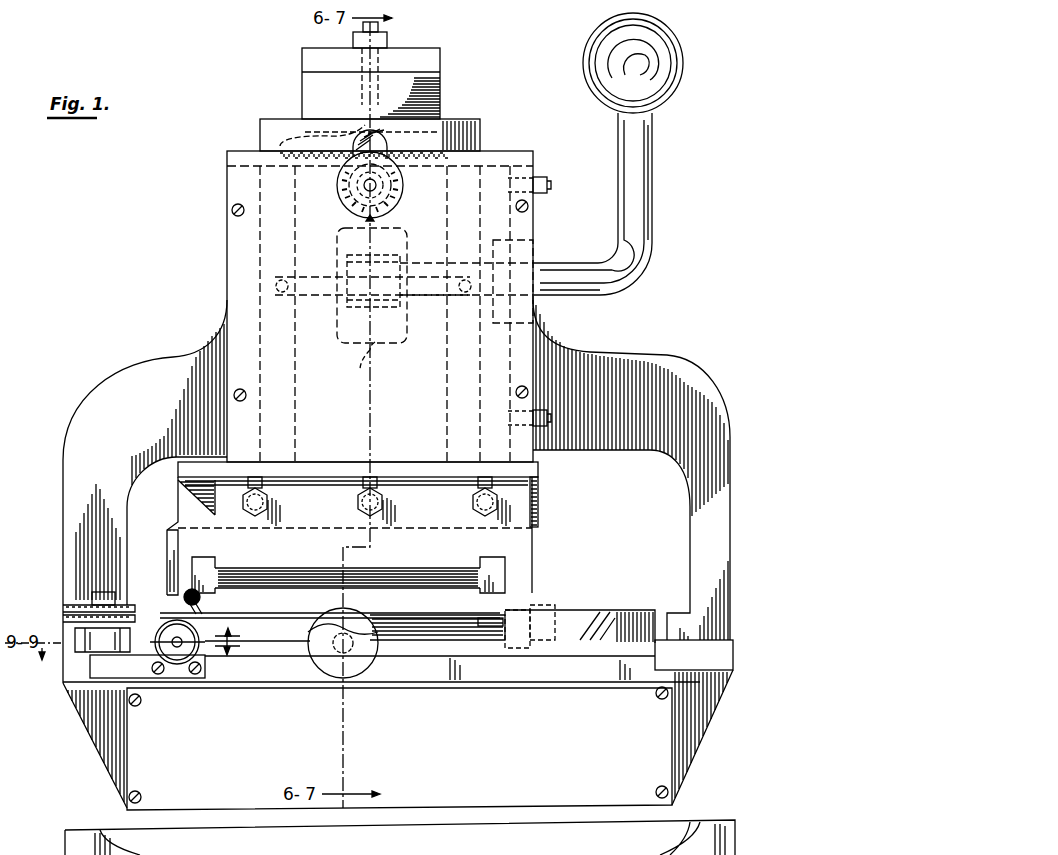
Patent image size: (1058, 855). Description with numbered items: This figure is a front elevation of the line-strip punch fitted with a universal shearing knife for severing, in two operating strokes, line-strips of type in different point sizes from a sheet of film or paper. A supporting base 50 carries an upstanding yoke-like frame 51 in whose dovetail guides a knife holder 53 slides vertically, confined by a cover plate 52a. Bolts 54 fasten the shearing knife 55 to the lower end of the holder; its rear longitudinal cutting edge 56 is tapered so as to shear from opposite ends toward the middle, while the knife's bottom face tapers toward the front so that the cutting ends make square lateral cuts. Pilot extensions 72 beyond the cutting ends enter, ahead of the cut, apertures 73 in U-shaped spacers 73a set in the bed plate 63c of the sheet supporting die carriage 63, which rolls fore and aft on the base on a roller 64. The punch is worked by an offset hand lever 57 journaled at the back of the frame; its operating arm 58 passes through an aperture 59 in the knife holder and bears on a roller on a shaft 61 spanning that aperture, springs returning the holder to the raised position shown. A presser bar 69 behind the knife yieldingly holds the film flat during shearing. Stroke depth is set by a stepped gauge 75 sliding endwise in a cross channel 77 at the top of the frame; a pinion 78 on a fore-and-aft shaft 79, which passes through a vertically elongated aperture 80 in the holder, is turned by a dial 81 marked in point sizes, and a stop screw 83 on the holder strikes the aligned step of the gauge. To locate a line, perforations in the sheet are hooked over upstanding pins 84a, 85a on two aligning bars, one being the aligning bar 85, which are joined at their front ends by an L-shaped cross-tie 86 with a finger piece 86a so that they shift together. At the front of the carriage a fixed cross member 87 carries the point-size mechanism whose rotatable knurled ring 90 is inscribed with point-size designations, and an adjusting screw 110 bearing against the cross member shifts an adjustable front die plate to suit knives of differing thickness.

The supporting base 50 is at (703, 712).
The upstanding yoke-like frame 51 is at (668, 368).
The cover plate 52a is at (242, 234).
The knife holder 53 is at (268, 130).
The bolts 54 is at (472, 502).
The shearing knife 55 is at (525, 542).
The rear longitudinal cutting edge 56 is at (302, 574).
The offset hand lever 57 is at (640, 187).
The operating arm 58 is at (398, 307).
The aperture 59 is at (362, 355).
The shaft 61 is at (337, 297).
The sheet supporting die carriage 63 is at (630, 610).
The bed plate 63c is at (596, 670).
The roller 64 is at (150, 668).
The presser bar 69 is at (328, 590).
The pilot extensions 72 is at (172, 578).
The apertures 73 is at (530, 635).
The U-shaped spacers 73a is at (543, 612).
The stepped gauge 75 is at (310, 108).
The cross channel 77 is at (240, 158).
The pinion 78 is at (348, 168).
The fore-and-aft shaft 79 is at (376, 185).
The vertically elongated aperture 80 is at (368, 132).
The dial 81 is at (347, 212).
The stop screw 83 is at (380, 24).
The upstanding pin 84a is at (212, 598).
The aligning bar 85 is at (490, 610).
The upstanding pin 85a is at (488, 616).
The L-shaped cross-tie 86 is at (255, 630).
The finger piece 86a is at (180, 600).
The fixed cross member 87 is at (595, 626).
The rotatable knurled ring 90 is at (183, 672).
The adjusting screw 110 is at (310, 660).